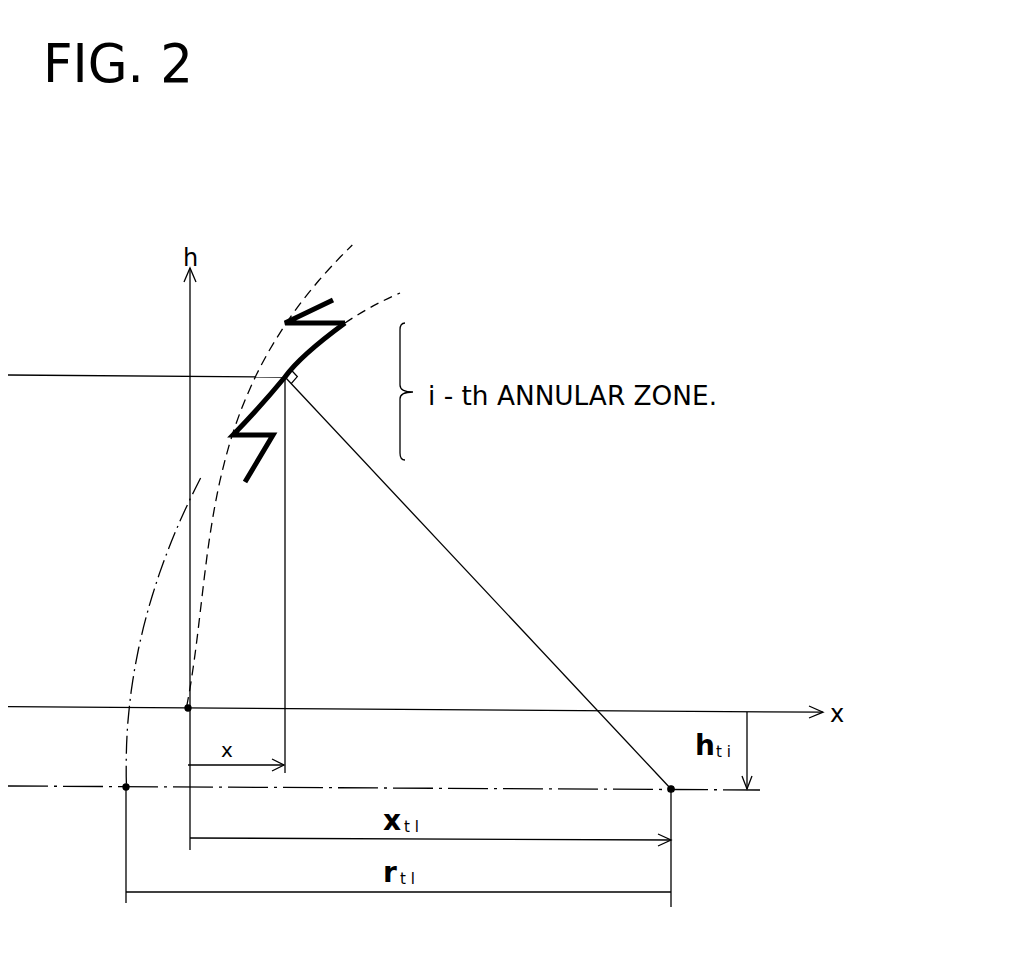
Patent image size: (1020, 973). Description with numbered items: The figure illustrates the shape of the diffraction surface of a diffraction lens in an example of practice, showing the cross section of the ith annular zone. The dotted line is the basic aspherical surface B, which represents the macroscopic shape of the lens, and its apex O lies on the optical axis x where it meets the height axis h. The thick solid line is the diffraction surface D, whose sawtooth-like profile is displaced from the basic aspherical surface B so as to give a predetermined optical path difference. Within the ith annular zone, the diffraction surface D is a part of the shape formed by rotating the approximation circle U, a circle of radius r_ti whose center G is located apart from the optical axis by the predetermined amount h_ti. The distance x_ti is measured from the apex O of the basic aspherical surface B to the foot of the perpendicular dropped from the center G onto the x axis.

The basic aspherical surface B is at (323, 276).
The diffraction surface D is at (320, 352).
The approximation circle U is at (143, 610).
The center of the approximation circle G is at (673, 791).
The apex of the basic aspherical surface O is at (174, 726).